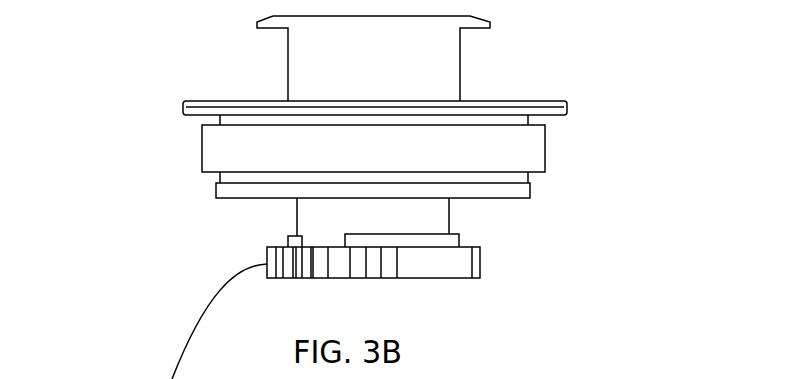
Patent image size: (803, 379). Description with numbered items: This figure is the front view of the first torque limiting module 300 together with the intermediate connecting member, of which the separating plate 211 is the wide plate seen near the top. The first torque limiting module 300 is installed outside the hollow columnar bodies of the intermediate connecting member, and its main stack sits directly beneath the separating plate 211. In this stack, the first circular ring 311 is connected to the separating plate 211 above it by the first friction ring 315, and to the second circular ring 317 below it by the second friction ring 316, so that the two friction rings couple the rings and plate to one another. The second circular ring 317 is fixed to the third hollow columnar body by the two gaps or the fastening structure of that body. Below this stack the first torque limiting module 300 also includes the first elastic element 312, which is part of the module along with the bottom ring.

The separating plate 211 is at (183, 101).
The first torque limiting module 300 is at (145, 219).
The first circular ring 311 is at (545, 148).
The first elastic element 312 is at (449, 218).
The first friction ring 315 is at (548, 125).
The second friction ring 316 is at (530, 183).
The second circular ring 317 is at (225, 198).